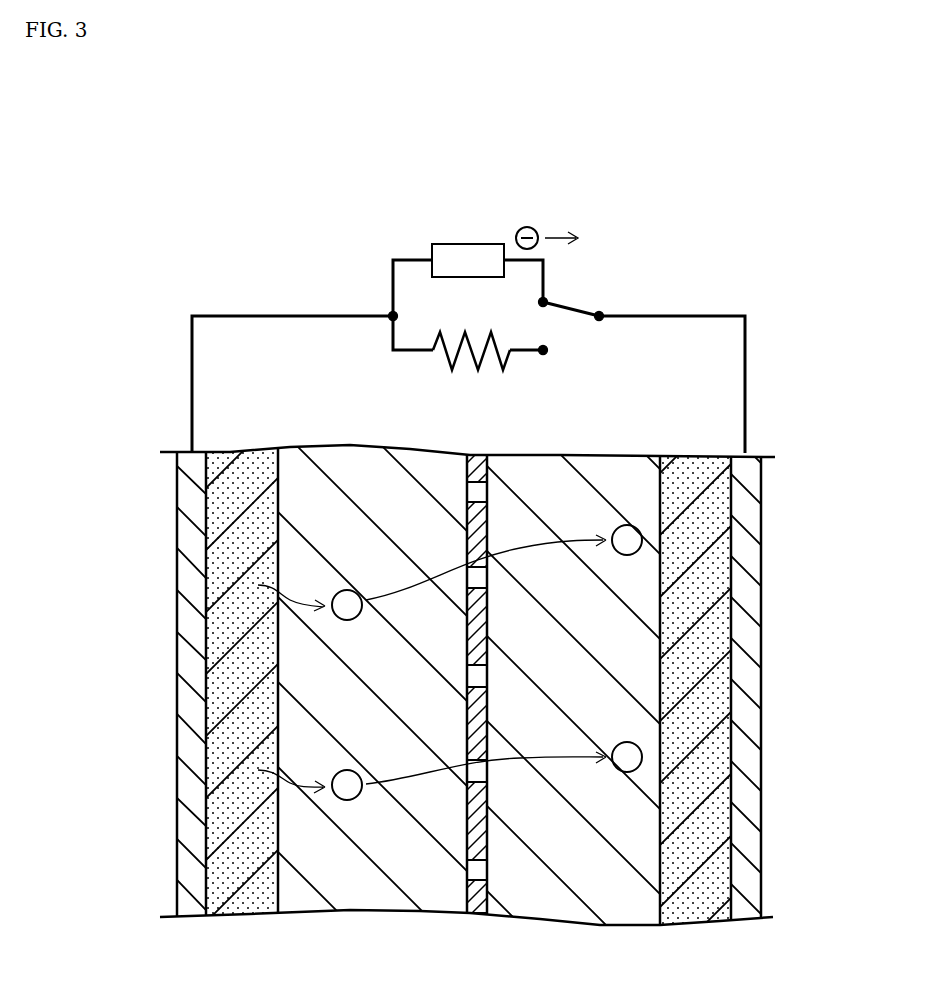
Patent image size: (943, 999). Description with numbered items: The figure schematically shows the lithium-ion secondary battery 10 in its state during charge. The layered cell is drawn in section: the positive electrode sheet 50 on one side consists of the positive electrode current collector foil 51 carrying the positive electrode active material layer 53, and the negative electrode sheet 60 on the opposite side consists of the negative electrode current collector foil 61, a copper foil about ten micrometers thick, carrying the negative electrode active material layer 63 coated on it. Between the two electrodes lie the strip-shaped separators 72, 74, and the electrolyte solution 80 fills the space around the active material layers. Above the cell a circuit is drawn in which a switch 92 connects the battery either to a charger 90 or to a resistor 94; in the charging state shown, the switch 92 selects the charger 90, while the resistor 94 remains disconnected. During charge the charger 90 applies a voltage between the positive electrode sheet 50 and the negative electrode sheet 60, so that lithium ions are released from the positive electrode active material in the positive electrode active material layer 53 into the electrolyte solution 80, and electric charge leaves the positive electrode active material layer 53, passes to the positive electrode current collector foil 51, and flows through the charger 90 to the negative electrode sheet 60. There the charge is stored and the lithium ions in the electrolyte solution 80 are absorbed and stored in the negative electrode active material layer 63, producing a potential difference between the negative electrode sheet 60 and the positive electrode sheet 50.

The lithium-ion secondary battery 10 is at (714, 229).
The positive electrode sheet 50 is at (171, 446).
The positive electrode current collector foil 51 is at (177, 580).
The positive electrode active material layer 53 is at (238, 451).
The negative electrode sheet 60 is at (754, 447).
The negative electrode current collector foil 61 is at (762, 585).
The negative electrode active material layer 63 is at (691, 452).
The separator 72 is at (530, 701).
The separator 74 is at (490, 897).
The electrolyte solution 80 is at (401, 866).
The charger 90 is at (493, 244).
The switch 92 is at (583, 302).
The resistor 94 is at (462, 366).